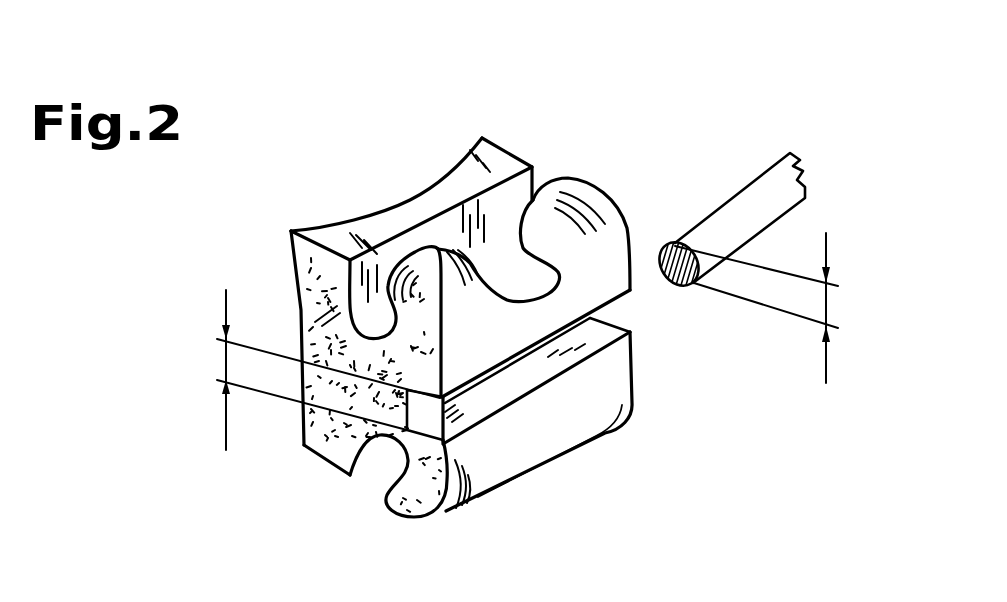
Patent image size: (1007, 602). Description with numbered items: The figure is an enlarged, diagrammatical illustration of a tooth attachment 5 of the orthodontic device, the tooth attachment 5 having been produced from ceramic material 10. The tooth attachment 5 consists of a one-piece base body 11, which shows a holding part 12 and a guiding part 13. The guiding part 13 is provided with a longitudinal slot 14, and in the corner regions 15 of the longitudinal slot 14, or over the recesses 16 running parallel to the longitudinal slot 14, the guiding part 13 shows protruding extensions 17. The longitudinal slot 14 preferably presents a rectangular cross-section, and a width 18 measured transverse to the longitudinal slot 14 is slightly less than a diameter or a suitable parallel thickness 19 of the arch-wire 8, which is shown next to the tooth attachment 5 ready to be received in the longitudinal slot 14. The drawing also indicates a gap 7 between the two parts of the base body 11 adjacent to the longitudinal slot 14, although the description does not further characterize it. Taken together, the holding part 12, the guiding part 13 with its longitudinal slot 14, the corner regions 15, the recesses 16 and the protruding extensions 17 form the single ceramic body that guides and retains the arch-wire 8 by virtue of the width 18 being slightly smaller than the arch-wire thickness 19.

The tooth attachment 5 is at (727, 92).
The parting gap between clamp halves 7 is at (616, 312).
The arch-wire 8 is at (785, 188).
The ceramic material 10 is at (335, 448).
The base body 11 is at (348, 362).
The holding part 12 is at (397, 214).
The guiding part 13 is at (487, 340).
The longitudinal slot 14 is at (435, 426).
The corner regions 15 is at (612, 130).
The recesses 16 is at (495, 273).
The protruding extensions 17 is at (442, 272).
The width 18 is at (222, 361).
The parallel thickness 19 is at (831, 308).